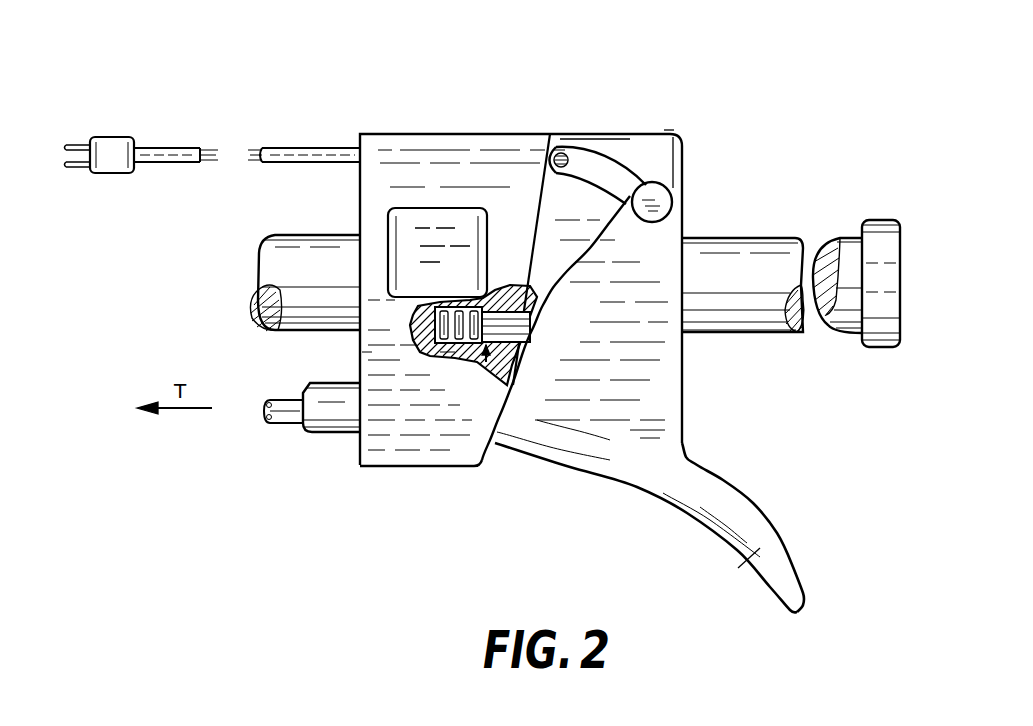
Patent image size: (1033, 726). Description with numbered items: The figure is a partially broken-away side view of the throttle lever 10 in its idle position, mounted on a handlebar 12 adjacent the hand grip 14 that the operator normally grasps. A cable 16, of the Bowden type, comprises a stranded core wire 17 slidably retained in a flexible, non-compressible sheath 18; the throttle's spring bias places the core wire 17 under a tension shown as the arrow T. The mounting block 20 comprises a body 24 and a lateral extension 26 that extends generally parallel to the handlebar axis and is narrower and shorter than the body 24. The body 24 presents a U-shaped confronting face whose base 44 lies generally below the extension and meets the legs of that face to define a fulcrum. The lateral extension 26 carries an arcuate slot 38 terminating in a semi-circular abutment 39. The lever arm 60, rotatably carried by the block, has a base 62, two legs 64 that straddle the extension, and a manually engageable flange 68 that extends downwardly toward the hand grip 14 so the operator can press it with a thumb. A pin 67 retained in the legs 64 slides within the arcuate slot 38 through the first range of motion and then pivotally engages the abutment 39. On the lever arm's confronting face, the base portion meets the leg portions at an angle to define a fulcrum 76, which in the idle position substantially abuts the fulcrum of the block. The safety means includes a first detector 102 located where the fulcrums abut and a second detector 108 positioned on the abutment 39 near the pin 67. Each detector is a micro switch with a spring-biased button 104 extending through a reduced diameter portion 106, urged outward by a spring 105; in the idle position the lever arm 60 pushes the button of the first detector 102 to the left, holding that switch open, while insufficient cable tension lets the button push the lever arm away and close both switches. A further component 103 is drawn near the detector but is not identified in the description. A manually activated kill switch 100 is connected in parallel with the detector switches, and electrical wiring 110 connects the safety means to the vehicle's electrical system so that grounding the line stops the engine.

The throttle lever 10 is at (343, 89).
The handlebar 12 is at (290, 255).
The hand grip 14 is at (750, 255).
The cable 16 is at (250, 425).
The core wire 17 is at (290, 420).
The sheath 18 is at (333, 410).
The mounting block 20 is at (438, 135).
The body 24 is at (390, 354).
The lateral extension 26 is at (668, 148).
The arcuate slot 38 is at (612, 172).
The abutment 39 is at (560, 147).
The base 44 is at (482, 466).
The lever arm 60 is at (752, 422).
The base 62 is at (643, 413).
The legs 64 is at (695, 328).
The pin 67 is at (655, 205).
The manually engageable flange 68 is at (748, 560).
The fulcrum 76 is at (532, 323).
The kill switch 100 is at (420, 220).
The first detector 102 is at (492, 362).
The fitting body 103 is at (500, 305).
The spring-biased button 104 is at (517, 352).
The spring 105 is at (450, 352).
The reduced diameter portion 106 is at (500, 306).
The second detector 108 is at (557, 156).
The electrical wiring 110 is at (164, 148).